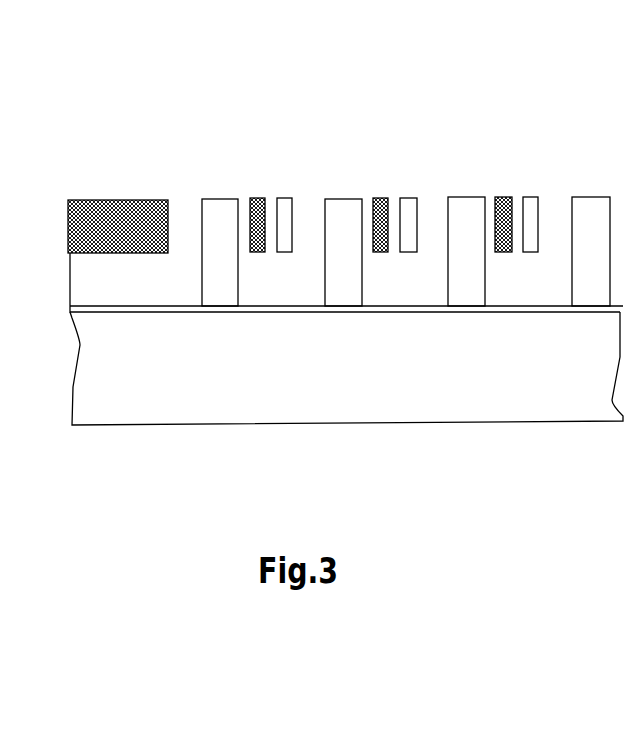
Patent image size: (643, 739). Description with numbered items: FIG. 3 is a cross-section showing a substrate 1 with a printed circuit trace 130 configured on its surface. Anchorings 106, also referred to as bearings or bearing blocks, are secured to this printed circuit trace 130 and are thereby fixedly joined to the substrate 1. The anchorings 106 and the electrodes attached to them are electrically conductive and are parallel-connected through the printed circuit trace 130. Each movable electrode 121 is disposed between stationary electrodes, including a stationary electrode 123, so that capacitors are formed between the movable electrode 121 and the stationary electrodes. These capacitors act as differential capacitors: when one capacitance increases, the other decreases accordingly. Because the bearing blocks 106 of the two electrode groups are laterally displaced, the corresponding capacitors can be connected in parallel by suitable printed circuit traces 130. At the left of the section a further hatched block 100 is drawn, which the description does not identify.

The substrate 1 is at (355, 400).
The contact block 100 is at (90, 215).
The anchorings 106 is at (213, 217).
The movable electrode 121 is at (253, 203).
The stationary electrode 123 is at (285, 203).
The printed circuit trace 130 is at (407, 308).